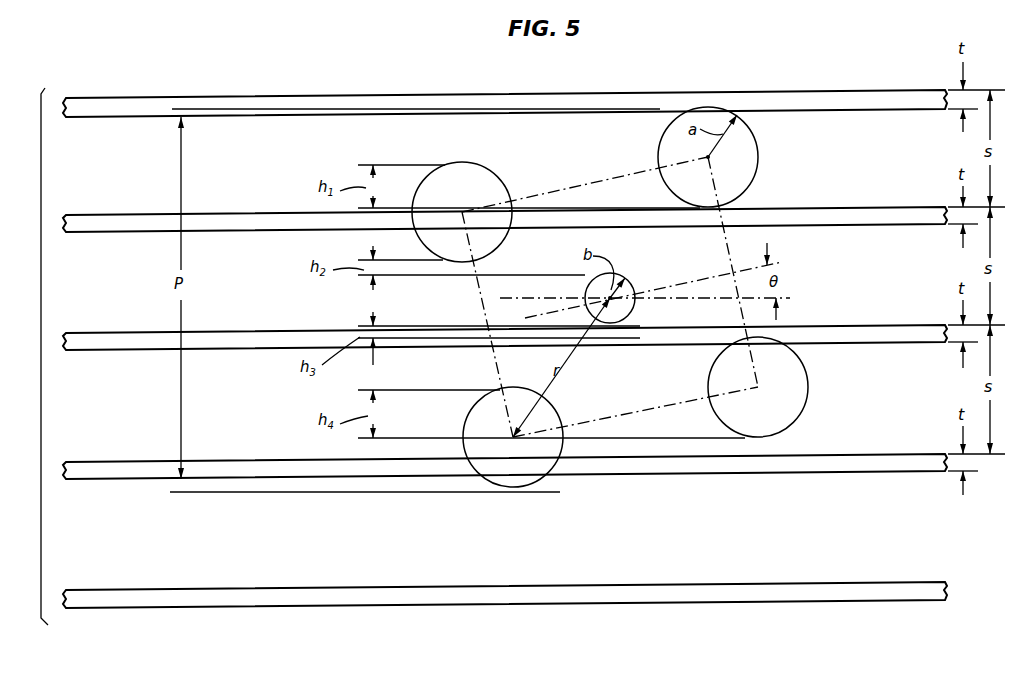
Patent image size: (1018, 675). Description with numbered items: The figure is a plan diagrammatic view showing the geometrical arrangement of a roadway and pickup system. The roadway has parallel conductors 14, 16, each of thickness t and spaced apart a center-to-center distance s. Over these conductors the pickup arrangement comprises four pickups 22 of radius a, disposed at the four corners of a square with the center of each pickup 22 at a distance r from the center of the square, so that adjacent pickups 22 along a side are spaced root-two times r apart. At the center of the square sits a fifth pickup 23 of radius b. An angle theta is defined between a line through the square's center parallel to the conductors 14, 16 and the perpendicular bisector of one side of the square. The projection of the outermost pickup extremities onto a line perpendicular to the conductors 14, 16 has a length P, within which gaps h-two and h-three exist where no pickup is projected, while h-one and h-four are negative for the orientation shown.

The conductor 14 is at (104, 234).
The conductor 16 is at (102, 118).
The pickup 22 is at (487, 171).
The fifth pickup 23 is at (617, 277).